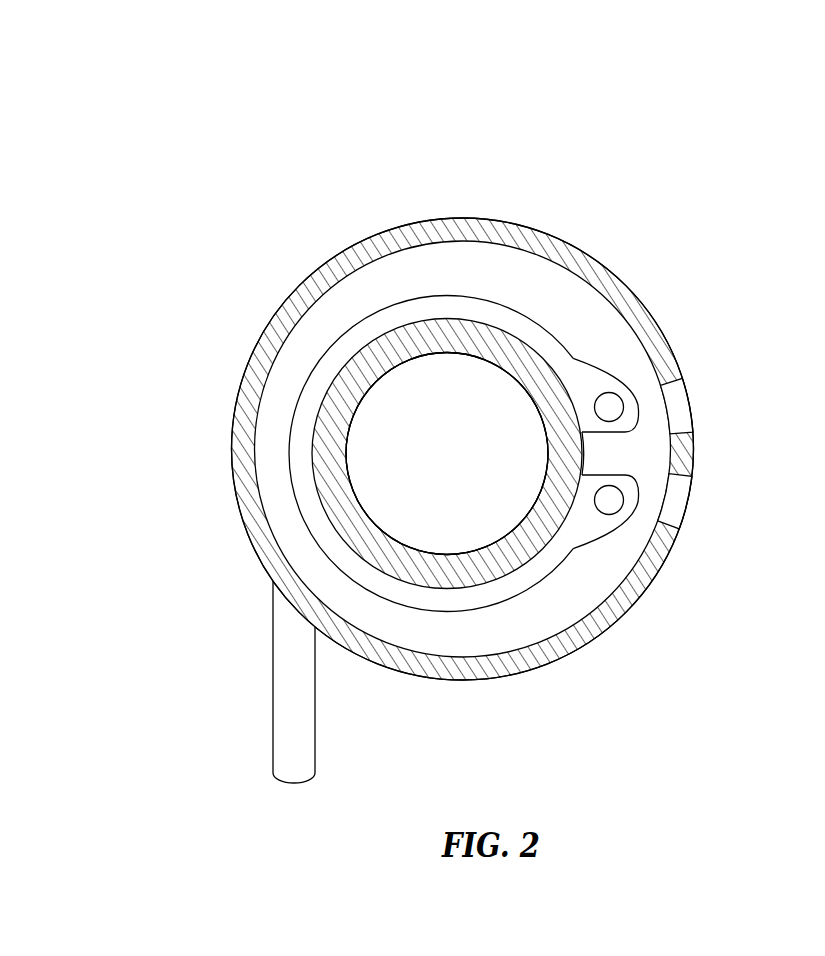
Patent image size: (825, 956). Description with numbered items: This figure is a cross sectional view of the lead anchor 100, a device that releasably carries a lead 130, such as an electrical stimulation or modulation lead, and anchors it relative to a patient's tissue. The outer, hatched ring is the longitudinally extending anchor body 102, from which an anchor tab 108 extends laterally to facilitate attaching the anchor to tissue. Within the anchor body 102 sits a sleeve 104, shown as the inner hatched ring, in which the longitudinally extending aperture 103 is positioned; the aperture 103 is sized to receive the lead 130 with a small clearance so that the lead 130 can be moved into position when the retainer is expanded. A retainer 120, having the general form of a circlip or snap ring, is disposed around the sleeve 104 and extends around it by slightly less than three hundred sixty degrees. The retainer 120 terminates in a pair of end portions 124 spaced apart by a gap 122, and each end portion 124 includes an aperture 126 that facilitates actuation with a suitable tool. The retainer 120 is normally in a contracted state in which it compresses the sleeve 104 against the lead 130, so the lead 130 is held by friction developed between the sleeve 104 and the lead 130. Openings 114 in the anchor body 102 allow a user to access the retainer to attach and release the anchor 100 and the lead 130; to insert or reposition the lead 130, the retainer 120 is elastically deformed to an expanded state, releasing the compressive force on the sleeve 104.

The lead anchor 100 is at (670, 162).
The anchor body 102 is at (215, 362).
The longitudinally extending aperture 103 is at (345, 467).
The sleeve 104 is at (510, 340).
The anchor tab 108 is at (278, 757).
The openings 114 is at (677, 418).
The retainer 120 is at (402, 317).
The gap 122 is at (613, 467).
The end portions 124 is at (638, 412).
The aperture 126 is at (610, 407).
The lead 130 is at (435, 478).